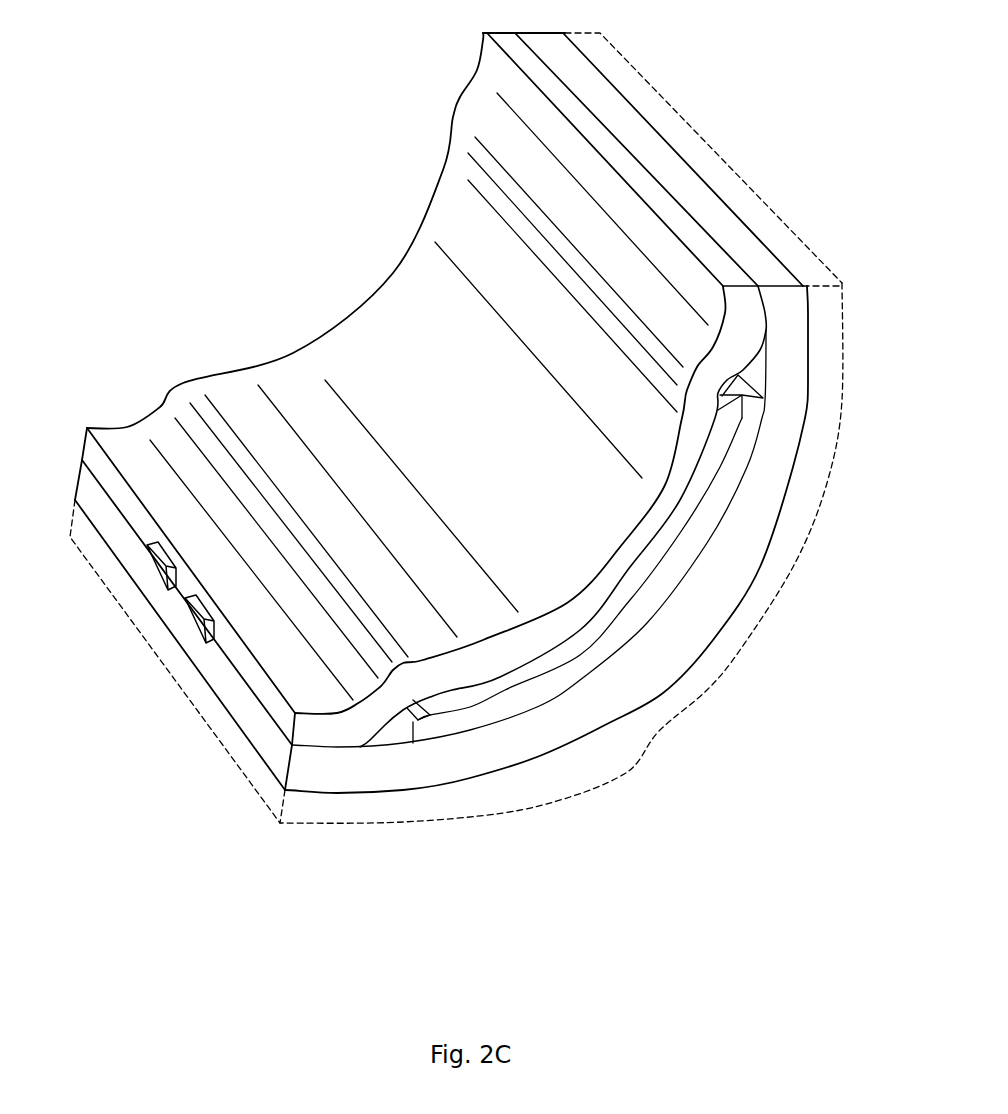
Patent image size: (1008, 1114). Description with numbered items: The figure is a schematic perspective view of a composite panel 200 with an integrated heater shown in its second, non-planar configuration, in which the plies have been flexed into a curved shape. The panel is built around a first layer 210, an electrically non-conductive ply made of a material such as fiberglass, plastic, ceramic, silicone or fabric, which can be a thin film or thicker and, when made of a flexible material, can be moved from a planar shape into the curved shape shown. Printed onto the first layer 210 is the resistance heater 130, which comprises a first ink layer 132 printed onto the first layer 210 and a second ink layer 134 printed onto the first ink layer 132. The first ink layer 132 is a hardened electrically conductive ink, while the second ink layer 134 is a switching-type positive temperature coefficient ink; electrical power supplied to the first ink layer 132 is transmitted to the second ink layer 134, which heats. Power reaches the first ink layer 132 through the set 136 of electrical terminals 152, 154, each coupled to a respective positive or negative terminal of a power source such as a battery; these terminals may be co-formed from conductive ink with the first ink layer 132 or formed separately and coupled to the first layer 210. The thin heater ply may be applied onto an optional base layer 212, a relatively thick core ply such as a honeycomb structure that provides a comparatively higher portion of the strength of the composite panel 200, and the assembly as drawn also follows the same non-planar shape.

The resistance heater 130 is at (339, 250).
The first ink layer 132 is at (587, 663).
The second ink layer 134 is at (662, 565).
The set of electrical terminals 136 is at (190, 642).
The electrical terminal 152 is at (167, 565).
The electrical terminal 154 is at (203, 618).
The composite panel 200 is at (734, 100).
The first layer 210 is at (777, 465).
The base layer 212 is at (677, 693).